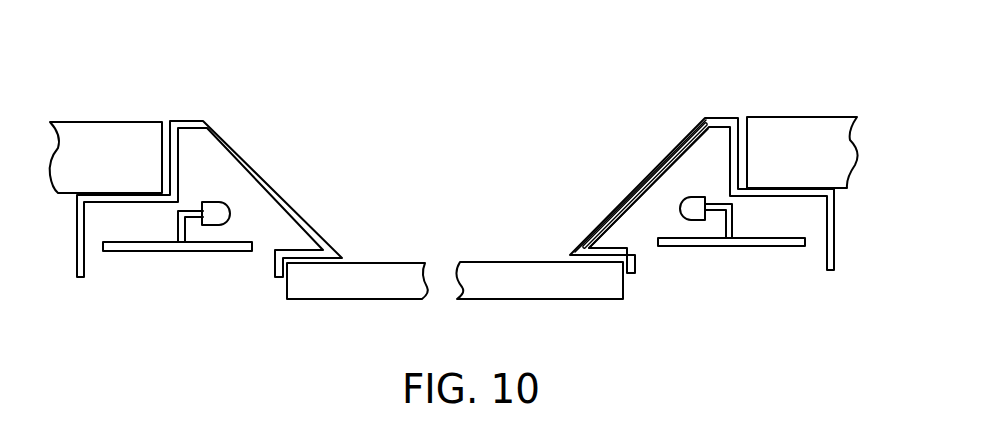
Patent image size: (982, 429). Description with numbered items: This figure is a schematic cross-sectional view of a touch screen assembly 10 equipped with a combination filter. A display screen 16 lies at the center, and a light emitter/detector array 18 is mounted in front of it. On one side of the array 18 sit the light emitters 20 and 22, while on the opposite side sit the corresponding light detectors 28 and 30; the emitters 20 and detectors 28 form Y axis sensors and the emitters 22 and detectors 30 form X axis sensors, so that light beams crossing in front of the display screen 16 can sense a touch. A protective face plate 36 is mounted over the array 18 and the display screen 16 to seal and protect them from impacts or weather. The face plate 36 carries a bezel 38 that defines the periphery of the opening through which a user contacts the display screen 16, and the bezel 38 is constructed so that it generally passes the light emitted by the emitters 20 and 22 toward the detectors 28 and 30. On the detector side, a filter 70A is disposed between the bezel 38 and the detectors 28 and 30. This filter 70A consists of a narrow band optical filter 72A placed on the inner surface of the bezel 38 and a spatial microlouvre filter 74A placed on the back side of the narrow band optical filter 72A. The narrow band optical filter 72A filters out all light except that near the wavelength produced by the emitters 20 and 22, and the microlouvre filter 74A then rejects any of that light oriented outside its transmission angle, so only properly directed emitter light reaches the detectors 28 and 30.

The touch screen assembly 10 is at (504, 149).
The display screen 16 is at (337, 300).
The light emitter/detector array 18 is at (153, 253).
The first row of light emitters 20 is at (263, 195).
The second row of light emitters 22 is at (230, 203).
The first row of light detectors 28 is at (735, 256).
The second row of light detectors 30 is at (692, 221).
The protective face plate 36 is at (103, 121).
The bezel 38 is at (197, 120).
The filter 70A is at (703, 116).
The narrow band optical filter 72A is at (660, 172).
The microlouvre filter 74A is at (628, 207).